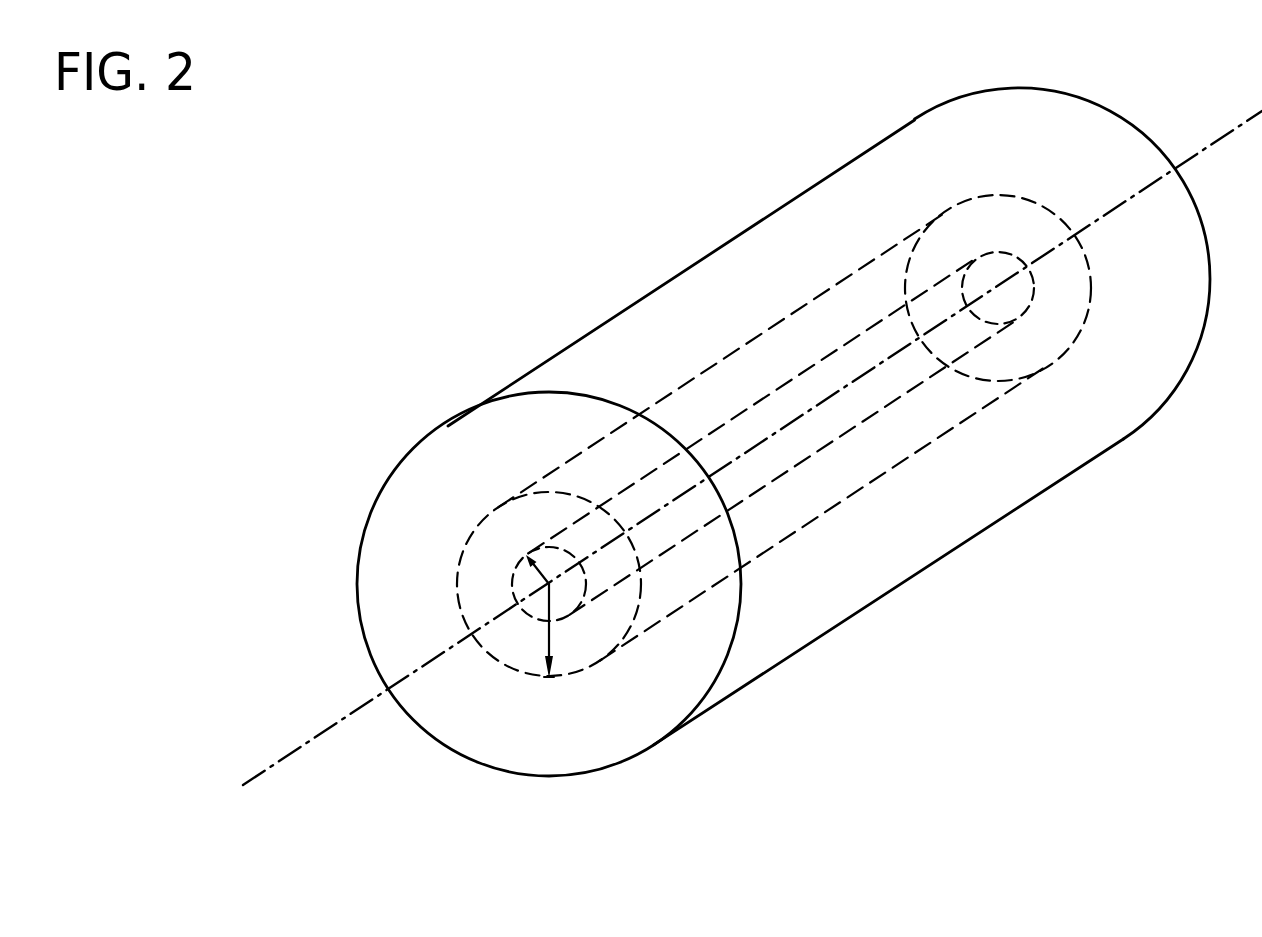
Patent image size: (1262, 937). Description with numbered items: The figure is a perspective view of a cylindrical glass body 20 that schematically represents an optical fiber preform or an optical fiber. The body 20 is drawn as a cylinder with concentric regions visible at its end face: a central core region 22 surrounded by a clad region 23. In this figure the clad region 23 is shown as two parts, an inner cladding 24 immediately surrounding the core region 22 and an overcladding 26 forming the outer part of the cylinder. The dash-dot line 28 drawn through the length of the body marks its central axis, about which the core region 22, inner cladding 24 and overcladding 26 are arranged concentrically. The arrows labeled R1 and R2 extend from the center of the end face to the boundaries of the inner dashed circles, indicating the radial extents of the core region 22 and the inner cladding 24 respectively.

The cylindrical glass body 20 is at (783, 416).
The core region 22 is at (538, 605).
The clad region 23 is at (593, 358).
The inner cladding 24 is at (593, 643).
The overcladding 26 is at (678, 678).
The central axis 28 is at (293, 751).
The radius of second inner portion R1 is at (548, 573).
The radius of first inner portion R2 is at (553, 635).